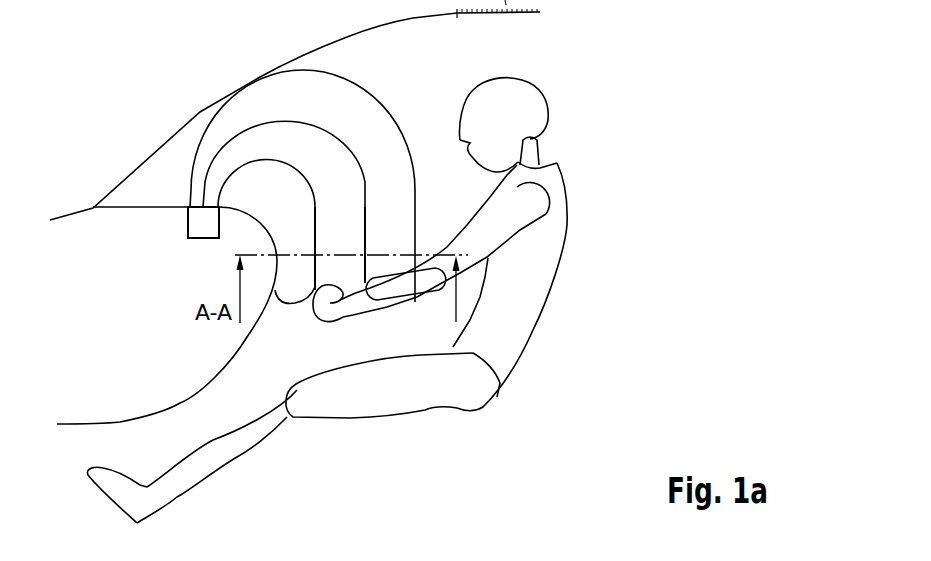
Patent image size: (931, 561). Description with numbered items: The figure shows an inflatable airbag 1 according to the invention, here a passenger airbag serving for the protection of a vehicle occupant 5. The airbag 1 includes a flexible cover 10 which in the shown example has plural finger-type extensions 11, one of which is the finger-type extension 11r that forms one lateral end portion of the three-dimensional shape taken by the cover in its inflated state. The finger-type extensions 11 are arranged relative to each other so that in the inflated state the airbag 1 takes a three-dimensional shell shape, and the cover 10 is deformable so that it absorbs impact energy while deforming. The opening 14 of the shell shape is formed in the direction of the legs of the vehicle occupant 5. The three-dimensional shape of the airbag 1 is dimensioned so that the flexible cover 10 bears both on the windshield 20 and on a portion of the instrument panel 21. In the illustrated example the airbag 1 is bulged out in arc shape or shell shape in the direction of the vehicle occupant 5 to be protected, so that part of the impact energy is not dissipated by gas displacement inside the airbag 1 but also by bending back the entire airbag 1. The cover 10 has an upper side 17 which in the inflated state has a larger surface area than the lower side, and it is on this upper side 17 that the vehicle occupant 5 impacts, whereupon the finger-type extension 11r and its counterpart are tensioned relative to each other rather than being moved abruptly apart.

The inflatable airbag 1 is at (211, 70).
The vehicle occupant 5 is at (565, 222).
The flexible cover 10 is at (395, 88).
The finger-type extensions 11 is at (388, 140).
The finger-type extension 11r is at (297, 227).
The opening 14 is at (291, 318).
The upper side 17 is at (402, 178).
The windshield 20 is at (290, 65).
The instrument panel 21 is at (133, 225).